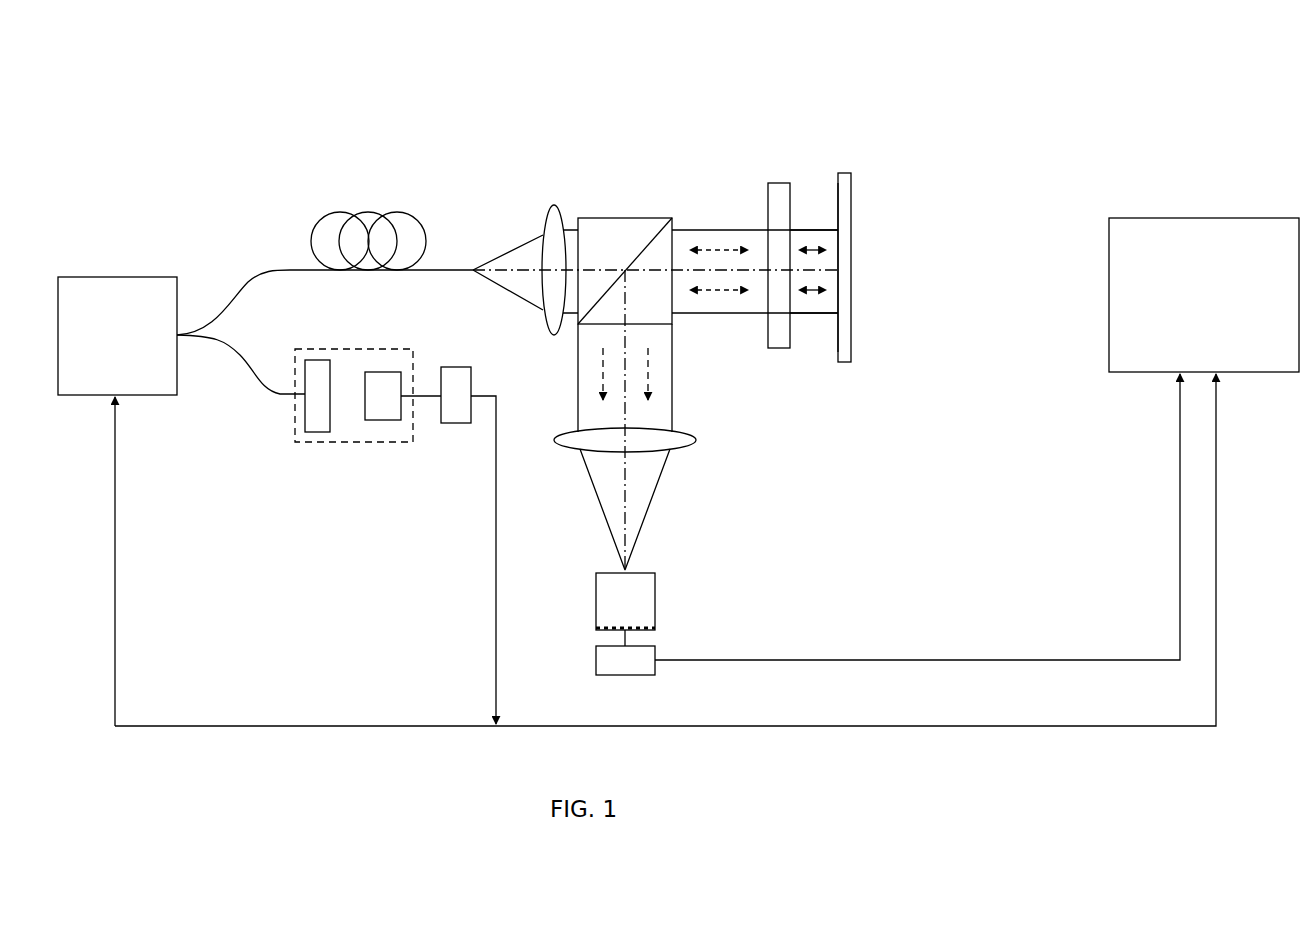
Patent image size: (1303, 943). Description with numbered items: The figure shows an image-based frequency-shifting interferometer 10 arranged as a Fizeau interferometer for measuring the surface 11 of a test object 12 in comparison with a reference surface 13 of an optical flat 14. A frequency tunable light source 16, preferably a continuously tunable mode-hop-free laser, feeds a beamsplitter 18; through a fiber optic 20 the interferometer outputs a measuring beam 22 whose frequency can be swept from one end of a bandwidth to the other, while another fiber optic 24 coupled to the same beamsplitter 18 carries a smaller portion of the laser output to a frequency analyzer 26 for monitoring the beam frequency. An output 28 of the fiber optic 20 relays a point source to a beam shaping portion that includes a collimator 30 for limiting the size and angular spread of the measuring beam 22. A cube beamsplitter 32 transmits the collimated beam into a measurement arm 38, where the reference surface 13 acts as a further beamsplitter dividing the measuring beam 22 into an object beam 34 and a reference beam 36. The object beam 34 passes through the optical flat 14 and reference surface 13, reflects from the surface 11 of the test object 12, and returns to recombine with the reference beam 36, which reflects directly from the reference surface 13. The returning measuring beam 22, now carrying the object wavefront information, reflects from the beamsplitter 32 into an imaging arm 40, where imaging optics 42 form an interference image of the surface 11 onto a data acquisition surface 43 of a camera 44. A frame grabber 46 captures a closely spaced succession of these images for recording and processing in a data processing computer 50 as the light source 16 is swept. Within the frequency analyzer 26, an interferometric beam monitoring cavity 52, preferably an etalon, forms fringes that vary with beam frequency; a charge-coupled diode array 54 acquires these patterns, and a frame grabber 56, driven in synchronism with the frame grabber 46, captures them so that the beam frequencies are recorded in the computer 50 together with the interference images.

The image-based frequency-shifting interferometer 10 is at (457, 137).
The surface of the test object 11 is at (837, 210).
The test object 12 is at (852, 205).
The reference surface 13 is at (797, 300).
The optical flat 14 is at (780, 182).
The frequency tunable light source 16 is at (131, 353).
The beamsplitter 18 is at (181, 332).
The fiber optic 20 is at (373, 210).
The measuring beam 22 is at (512, 247).
The fiber optic 24 is at (244, 388).
The frequency analyzer 26 is at (380, 349).
The output of the fiber 28 is at (473, 273).
The collimator 30 is at (553, 207).
The beamsplitter 32 is at (622, 217).
The object beam 34 is at (823, 314).
The reference beam 36 is at (768, 355).
The measurement arm 38 is at (737, 167).
The imaging arm 40 is at (746, 458).
The imaging optics 42 is at (560, 446).
The data acquisition surface 43 is at (616, 627).
The camera 44 is at (656, 610).
The frame grabber 46 is at (596, 655).
The data processing computer 50 is at (1218, 258).
The interferometric beam monitoring cavity 52 is at (313, 432).
The charge-coupled diode (CCD) array 54 is at (387, 420).
The frame grabber 56 is at (460, 423).